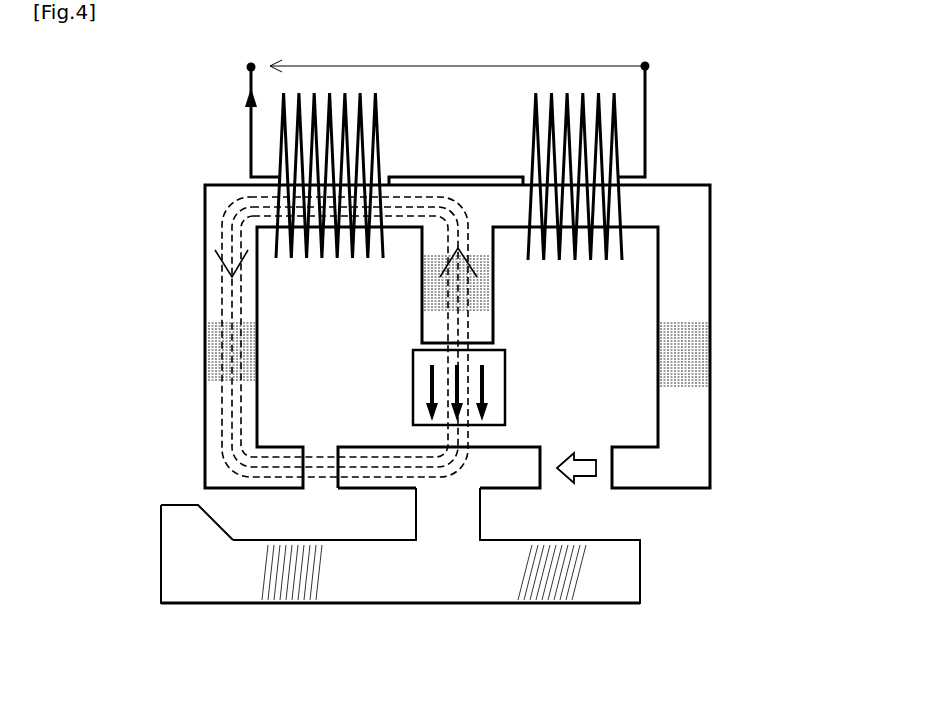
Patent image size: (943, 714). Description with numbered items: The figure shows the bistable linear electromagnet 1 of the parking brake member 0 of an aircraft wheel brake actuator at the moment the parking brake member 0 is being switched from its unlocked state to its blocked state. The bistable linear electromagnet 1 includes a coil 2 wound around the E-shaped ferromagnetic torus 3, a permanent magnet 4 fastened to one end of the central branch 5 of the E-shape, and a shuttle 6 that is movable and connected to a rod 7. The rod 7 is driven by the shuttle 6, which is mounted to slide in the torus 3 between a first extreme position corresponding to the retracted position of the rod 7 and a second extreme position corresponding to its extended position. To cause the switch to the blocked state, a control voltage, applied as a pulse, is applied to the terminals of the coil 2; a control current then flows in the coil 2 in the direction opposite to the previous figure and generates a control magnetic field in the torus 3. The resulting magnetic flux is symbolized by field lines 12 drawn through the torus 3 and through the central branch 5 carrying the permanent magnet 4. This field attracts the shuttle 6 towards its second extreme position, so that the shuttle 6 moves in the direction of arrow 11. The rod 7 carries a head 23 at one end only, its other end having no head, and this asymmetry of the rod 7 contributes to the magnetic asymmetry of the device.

The parking brake member 0 is at (122, 476).
The bistable linear electromagnet 1 is at (745, 374).
The coil 2 is at (279, 144).
The E-shaped ferromagnetic torus 3 is at (207, 320).
The permanent magnet 4 is at (490, 383).
The central branch 5 is at (478, 297).
The shuttle 6 is at (518, 489).
The rod 7 is at (207, 603).
The arrow 11 is at (582, 456).
The field lines 12 is at (214, 293).
The head 23 is at (178, 524).